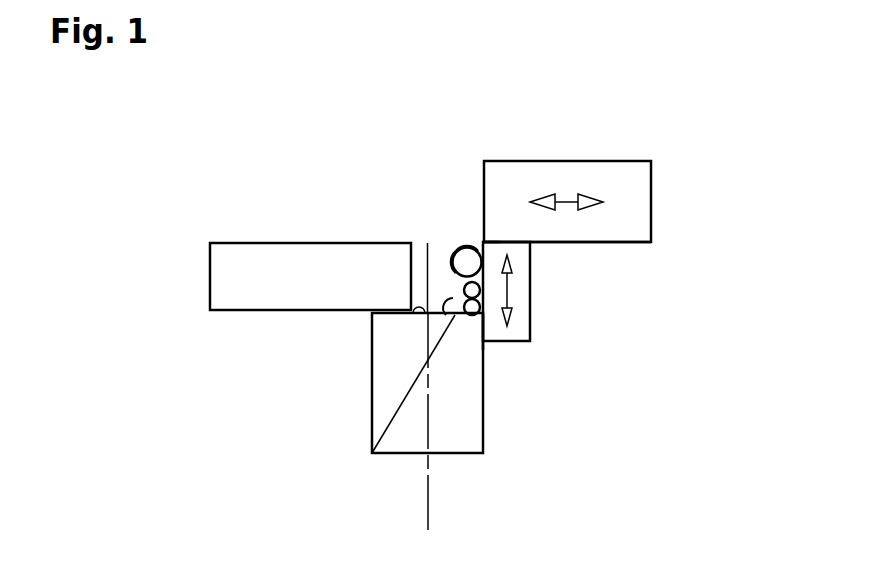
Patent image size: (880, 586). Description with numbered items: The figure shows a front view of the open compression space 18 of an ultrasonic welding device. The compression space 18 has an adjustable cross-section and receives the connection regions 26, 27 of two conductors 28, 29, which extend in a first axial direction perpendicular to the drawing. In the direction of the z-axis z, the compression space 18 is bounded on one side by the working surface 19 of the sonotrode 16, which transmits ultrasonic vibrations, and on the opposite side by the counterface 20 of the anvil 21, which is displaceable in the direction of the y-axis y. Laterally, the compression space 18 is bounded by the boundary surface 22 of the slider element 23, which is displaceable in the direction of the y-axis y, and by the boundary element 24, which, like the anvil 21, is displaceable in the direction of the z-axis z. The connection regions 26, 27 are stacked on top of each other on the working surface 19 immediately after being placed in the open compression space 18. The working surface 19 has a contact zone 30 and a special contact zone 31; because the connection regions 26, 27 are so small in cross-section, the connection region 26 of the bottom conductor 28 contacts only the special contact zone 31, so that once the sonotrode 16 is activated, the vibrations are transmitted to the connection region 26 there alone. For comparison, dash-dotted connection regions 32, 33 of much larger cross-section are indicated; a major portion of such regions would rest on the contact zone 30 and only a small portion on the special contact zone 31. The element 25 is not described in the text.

The sonotrode 16 is at (465, 428).
The compression space 18 is at (428, 243).
The working surface 19 is at (437, 292).
The counterface 20 is at (594, 252).
The anvil 21 is at (643, 203).
The boundary surface 22 is at (440, 252).
The slider element 23 is at (235, 290).
The boundary element 24 is at (473, 243).
The intermediate body 25 is at (522, 327).
The connection region 26 is at (485, 322).
The connection region 27 is at (372, 453).
The conductor 28 is at (495, 322).
The conductor 29 is at (500, 249).
The contact zone 30 is at (418, 316).
The special contact zone 31 is at (475, 340).
The connection region 32 is at (448, 283).
The connection region 33 is at (450, 246).
The y-axis y is at (565, 212).
The z-axis z is at (418, 524).